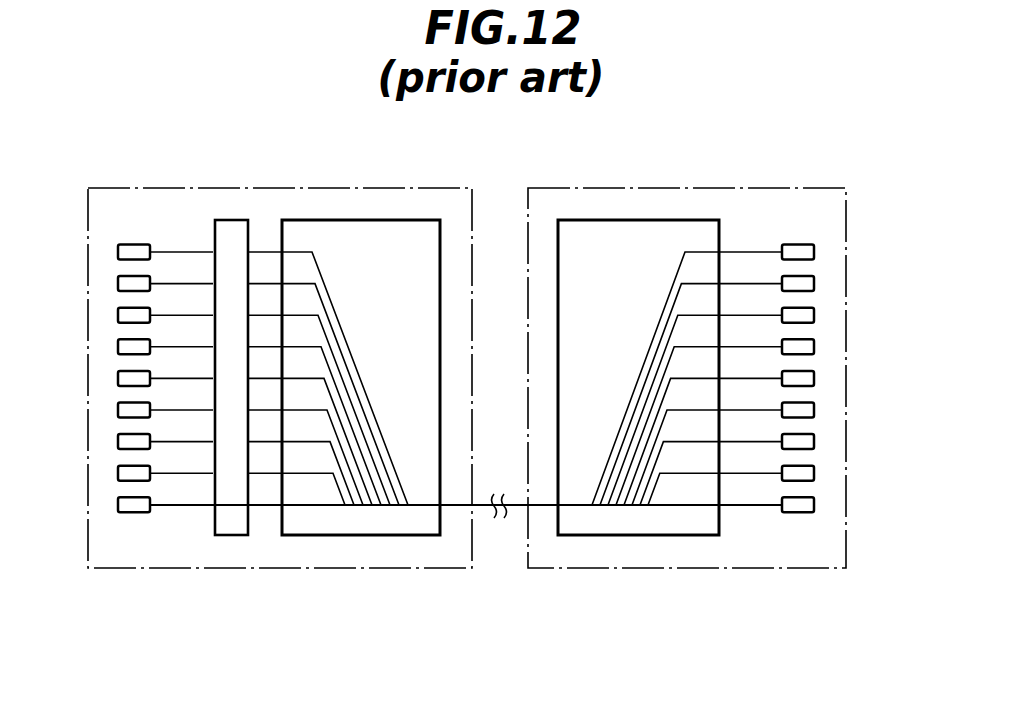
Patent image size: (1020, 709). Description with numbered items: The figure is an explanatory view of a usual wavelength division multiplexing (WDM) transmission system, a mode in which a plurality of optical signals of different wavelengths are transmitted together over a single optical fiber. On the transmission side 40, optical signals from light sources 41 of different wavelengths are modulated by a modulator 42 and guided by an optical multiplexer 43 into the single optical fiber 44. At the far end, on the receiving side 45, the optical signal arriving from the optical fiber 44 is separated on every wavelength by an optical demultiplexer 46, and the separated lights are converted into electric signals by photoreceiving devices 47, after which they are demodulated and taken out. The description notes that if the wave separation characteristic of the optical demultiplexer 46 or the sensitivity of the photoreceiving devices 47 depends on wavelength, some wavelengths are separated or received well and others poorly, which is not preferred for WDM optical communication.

The transmission side 40 is at (198, 568).
The light sources 41 is at (115, 500).
The modulator 42 is at (233, 528).
The optical multiplexer 43 is at (337, 538).
The optical fiber 44 is at (466, 569).
The receiving side 45 is at (658, 568).
The optical demultiplexer 46 is at (605, 538).
The photoreceiving devices 47 is at (815, 377).